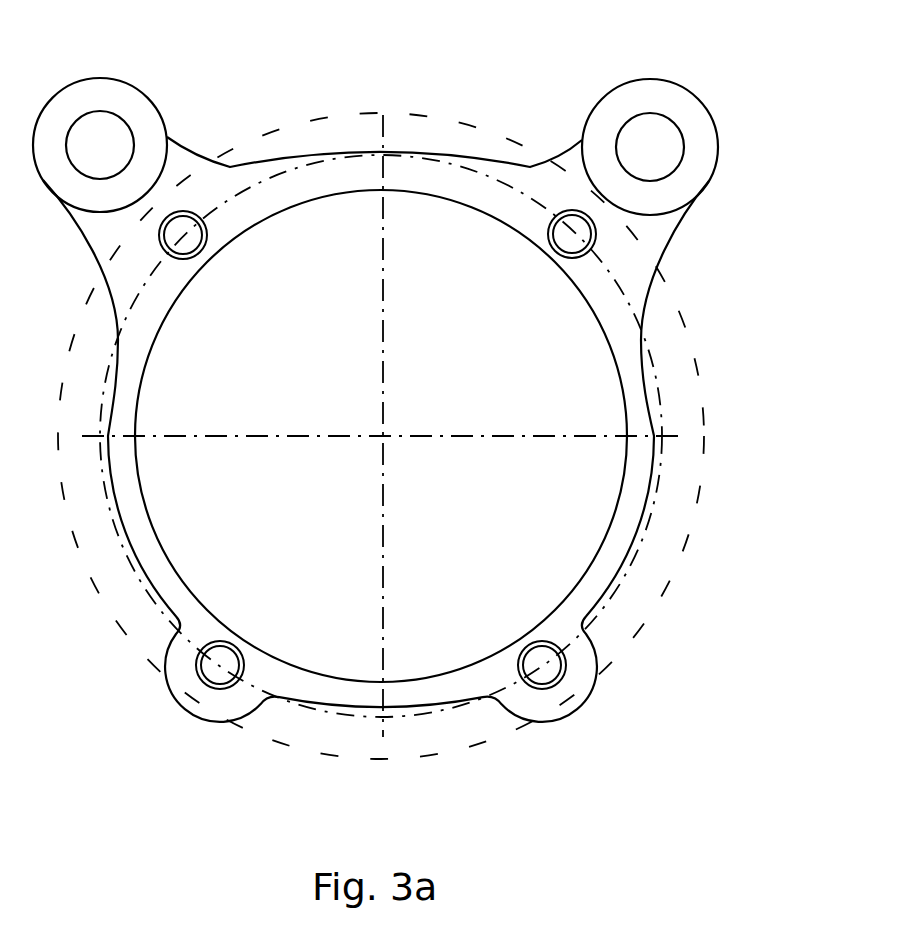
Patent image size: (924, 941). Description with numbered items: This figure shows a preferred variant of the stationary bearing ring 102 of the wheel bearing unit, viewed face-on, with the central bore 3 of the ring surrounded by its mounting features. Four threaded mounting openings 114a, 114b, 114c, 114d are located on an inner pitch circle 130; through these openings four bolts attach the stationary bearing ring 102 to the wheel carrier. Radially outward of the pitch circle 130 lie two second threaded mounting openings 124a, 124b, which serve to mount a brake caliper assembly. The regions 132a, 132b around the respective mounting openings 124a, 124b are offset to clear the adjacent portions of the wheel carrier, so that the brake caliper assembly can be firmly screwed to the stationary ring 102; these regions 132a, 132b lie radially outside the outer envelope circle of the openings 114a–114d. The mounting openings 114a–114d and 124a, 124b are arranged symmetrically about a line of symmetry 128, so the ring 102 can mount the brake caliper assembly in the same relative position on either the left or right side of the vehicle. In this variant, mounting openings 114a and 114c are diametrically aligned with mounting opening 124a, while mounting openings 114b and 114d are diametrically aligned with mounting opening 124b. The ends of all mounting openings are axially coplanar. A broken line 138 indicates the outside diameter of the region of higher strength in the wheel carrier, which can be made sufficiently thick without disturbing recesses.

The stationary bearing ring 102 is at (795, 437).
The central opening 3 is at (628, 524).
The line of symmetry 128 is at (370, 115).
The inner pitch circle 130 is at (437, 712).
The broken line 138 is at (688, 342).
The region around mounting opening 124a 132a is at (148, 135).
The region around mounting opening 124b 132b is at (680, 183).
The second threaded mounting opening 124a is at (102, 140).
The second threaded mounting opening 124b is at (645, 143).
The threaded mounting opening 114a is at (175, 246).
The threaded mounting opening 114b is at (580, 246).
The threaded mounting opening 114c is at (533, 672).
The threaded mounting opening 114d is at (218, 662).